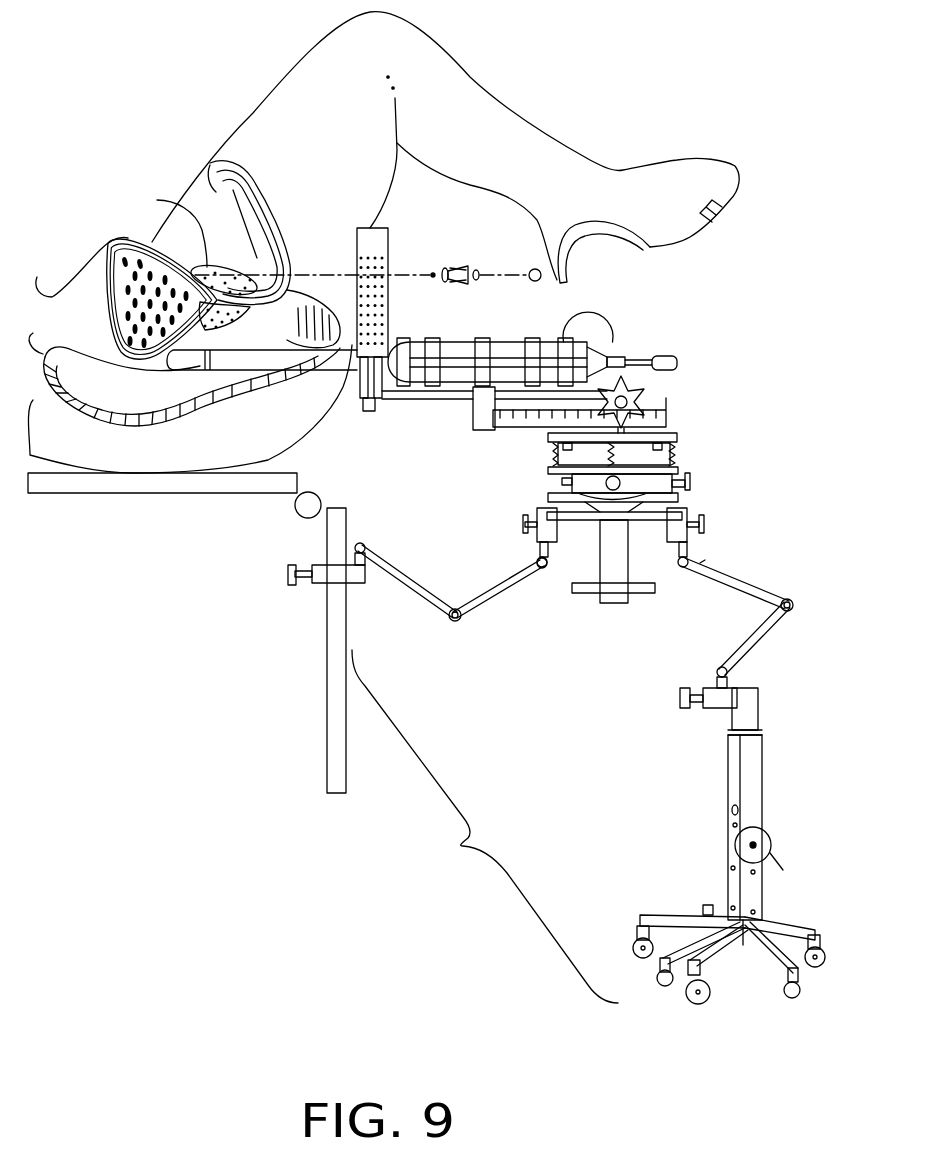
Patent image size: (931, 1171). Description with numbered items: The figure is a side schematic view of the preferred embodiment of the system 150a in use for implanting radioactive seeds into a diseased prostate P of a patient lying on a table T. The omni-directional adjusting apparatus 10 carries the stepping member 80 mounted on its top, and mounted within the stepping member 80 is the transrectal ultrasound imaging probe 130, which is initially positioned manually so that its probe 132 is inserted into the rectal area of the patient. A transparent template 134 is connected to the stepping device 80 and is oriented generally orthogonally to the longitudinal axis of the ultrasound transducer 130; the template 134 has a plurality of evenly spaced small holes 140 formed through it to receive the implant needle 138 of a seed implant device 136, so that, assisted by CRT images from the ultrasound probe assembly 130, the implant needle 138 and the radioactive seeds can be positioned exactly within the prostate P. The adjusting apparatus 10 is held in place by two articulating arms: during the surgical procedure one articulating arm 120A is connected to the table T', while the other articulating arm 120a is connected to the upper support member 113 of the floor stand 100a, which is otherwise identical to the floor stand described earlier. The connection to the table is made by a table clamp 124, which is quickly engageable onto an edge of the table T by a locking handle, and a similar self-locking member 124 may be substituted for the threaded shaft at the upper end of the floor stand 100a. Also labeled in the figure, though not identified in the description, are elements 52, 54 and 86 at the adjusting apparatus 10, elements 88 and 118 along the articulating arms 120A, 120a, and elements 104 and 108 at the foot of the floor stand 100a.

The omni-directional adjusting apparatus 10 is at (720, 468).
The left clamp joint 52 is at (588, 542).
The right clamp joint 54 is at (657, 525).
The stepping member 80 is at (678, 414).
The support column 86 is at (645, 598).
The arm joint 88 is at (700, 563).
The floor stand 100a is at (715, 790).
The casters 104 is at (728, 962).
The stand base 108 is at (668, 914).
The upper support member 113 is at (762, 707).
The elbow joint 118 is at (452, 622).
The articulating arm 120A is at (492, 605).
The articulating arm 120a is at (752, 578).
The table clamp 124 is at (357, 585).
The transrectal ultrasound imaging probe 130 is at (505, 336).
The probe 132 is at (340, 417).
The template 134 is at (390, 308).
The seed implant device 136 is at (462, 266).
The implant needle 138 is at (416, 276).
The small holes 140 is at (390, 272).
The system 150a is at (485, 826).
The prostate P is at (172, 229).
The table T is at (162, 499).
The table T' is at (303, 650).